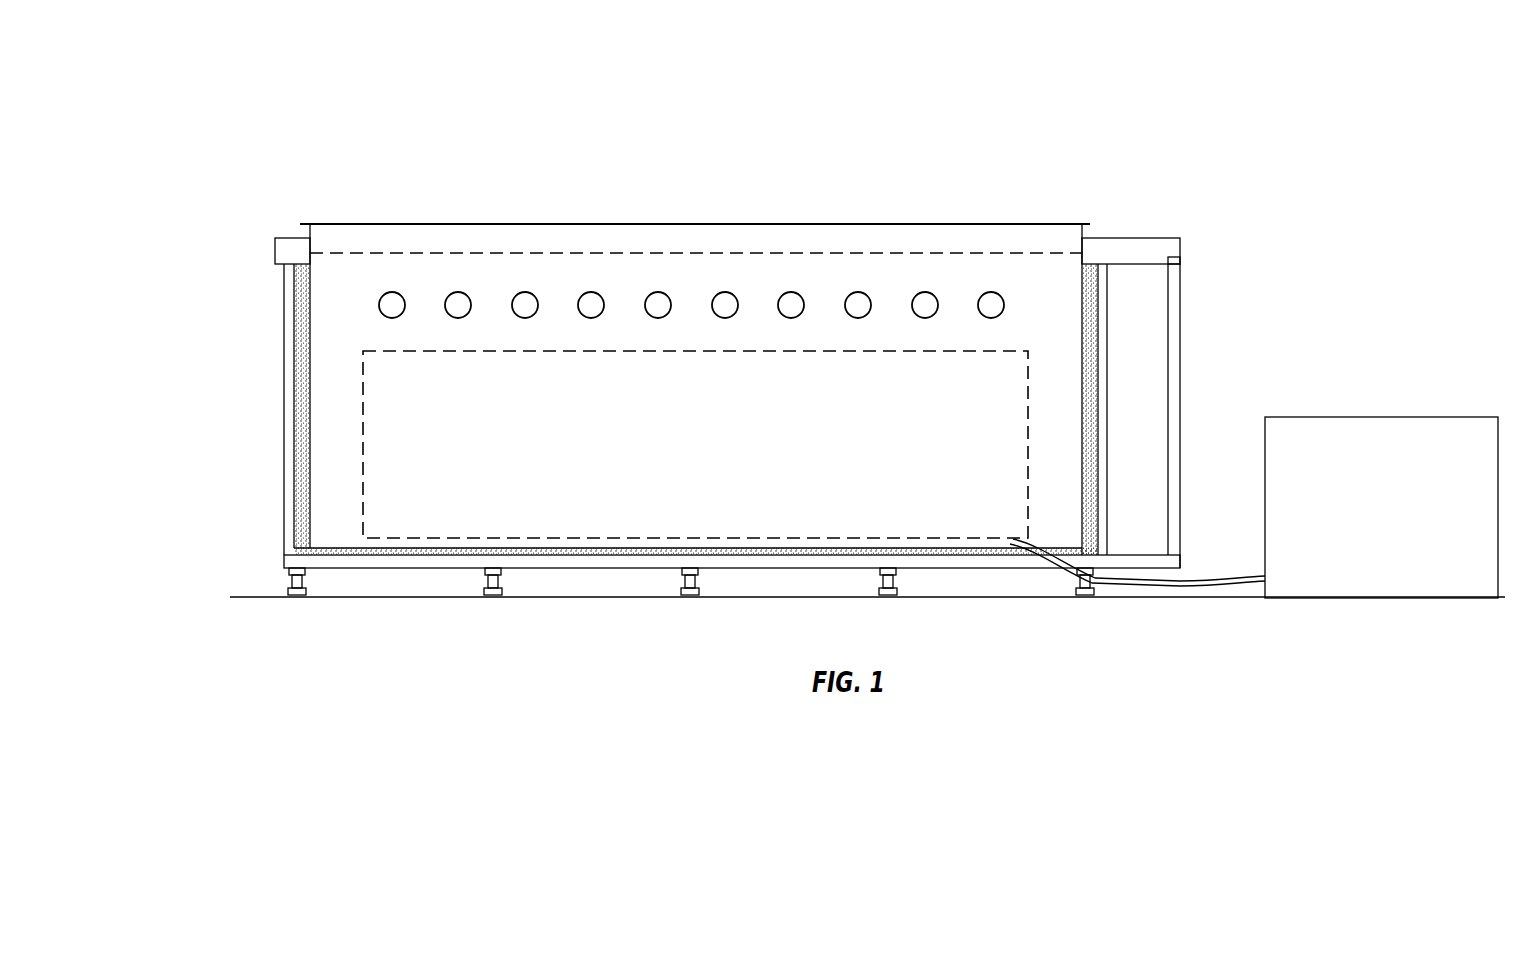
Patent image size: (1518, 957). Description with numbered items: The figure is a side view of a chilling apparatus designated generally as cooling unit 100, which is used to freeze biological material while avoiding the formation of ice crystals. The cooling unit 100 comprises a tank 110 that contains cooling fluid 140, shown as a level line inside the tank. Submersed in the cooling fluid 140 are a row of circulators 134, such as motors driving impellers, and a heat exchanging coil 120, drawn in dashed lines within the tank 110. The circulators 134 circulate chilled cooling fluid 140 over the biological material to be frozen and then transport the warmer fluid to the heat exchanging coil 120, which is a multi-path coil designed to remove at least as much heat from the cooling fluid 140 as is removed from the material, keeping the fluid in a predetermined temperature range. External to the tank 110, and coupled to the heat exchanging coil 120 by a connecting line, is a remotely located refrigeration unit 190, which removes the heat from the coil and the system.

The cooling unit 100 is at (328, 117).
The tank 110 is at (1100, 228).
The heat exchanging coil 120 is at (380, 443).
The circulators 134 is at (733, 285).
The cooling fluid 140 is at (696, 225).
The refrigeration unit 190 is at (1407, 413).